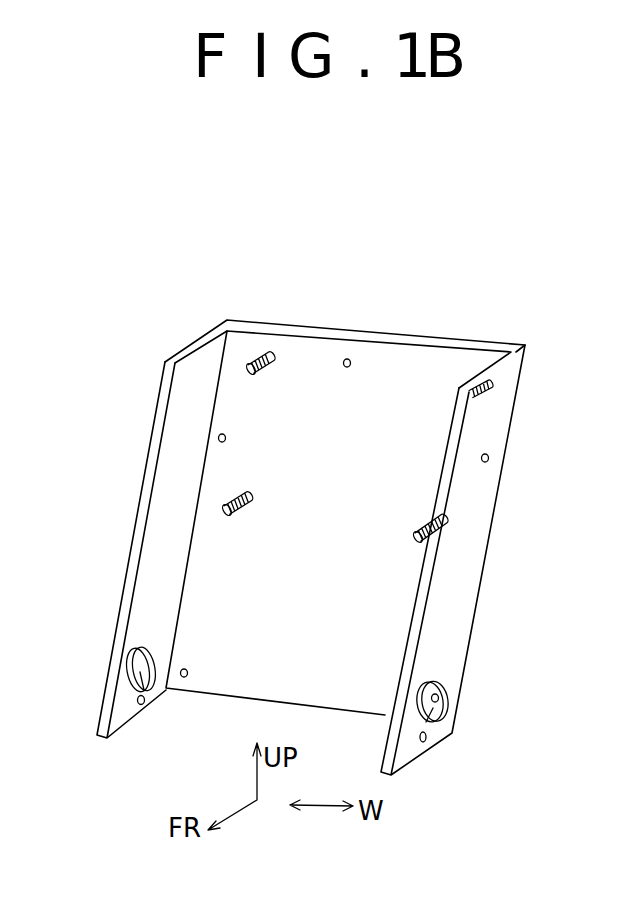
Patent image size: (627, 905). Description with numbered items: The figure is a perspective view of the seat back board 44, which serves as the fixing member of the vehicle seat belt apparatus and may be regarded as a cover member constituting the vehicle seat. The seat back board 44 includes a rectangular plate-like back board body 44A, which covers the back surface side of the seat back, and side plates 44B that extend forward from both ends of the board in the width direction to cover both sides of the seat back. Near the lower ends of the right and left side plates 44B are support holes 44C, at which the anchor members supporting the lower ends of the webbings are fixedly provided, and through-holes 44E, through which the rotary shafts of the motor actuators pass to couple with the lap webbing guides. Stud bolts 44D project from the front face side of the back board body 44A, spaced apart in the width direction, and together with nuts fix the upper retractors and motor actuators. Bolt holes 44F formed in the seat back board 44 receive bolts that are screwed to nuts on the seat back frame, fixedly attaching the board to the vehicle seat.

The seat back board 44 is at (403, 321).
The back board body 44A is at (313, 357).
The side plates 44B is at (137, 617).
The support holes 44C is at (142, 675).
The stud bolts 44D is at (262, 375).
The through-holes 44E is at (147, 699).
The bolt holes 44F is at (327, 482).